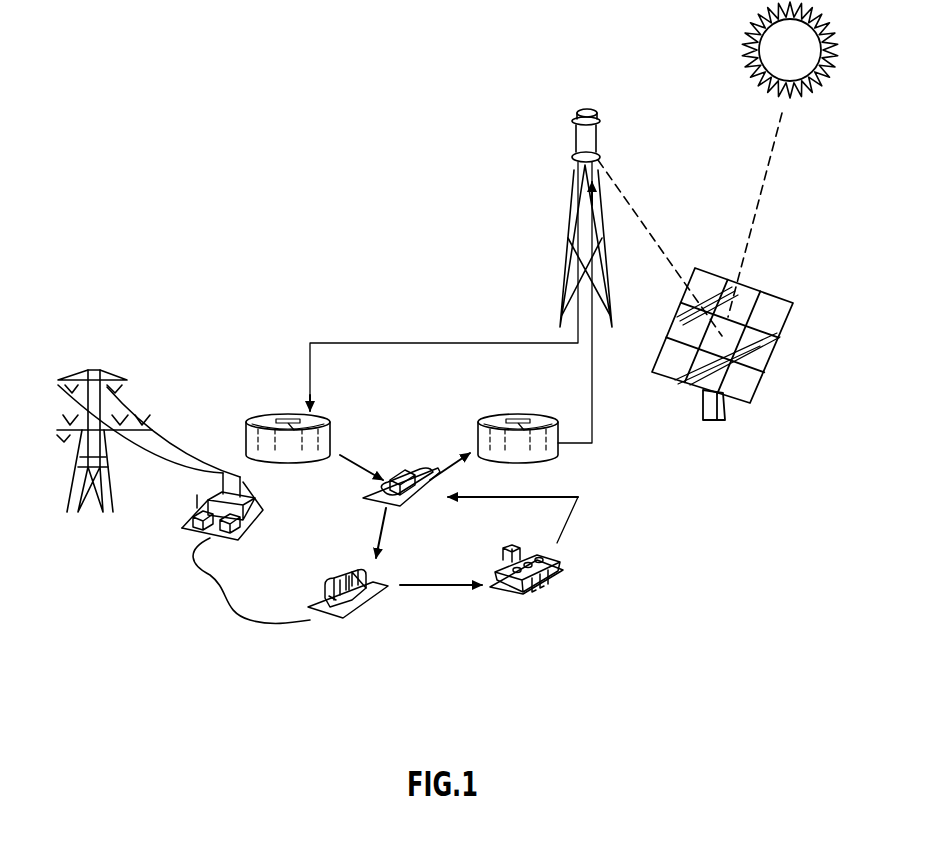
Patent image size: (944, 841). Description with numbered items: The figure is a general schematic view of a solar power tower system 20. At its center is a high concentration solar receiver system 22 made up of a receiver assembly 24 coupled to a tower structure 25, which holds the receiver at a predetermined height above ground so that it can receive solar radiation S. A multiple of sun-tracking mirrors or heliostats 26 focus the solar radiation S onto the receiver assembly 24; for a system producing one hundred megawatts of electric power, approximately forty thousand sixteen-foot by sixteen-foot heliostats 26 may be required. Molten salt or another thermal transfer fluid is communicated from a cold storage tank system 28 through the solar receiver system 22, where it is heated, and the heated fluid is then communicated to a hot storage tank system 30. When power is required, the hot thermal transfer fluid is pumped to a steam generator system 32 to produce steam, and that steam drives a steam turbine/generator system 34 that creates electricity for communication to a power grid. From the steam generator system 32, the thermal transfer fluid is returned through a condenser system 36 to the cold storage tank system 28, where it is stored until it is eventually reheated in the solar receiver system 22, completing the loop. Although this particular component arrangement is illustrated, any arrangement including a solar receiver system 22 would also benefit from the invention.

The solar power tower system 20 is at (258, 178).
The high concentration solar receiver system 22 is at (516, 268).
The receiver assembly 24 is at (580, 139).
The tower structure 25 is at (567, 262).
The heliostats 26 is at (810, 347).
The cold storage tank system 28 is at (543, 445).
The hot storage tank system 30 is at (328, 436).
The steam generator system 32 is at (380, 502).
The steam turbine/generator system 34 is at (335, 612).
The condenser system 36 is at (555, 568).
The solar radiation S is at (770, 155).